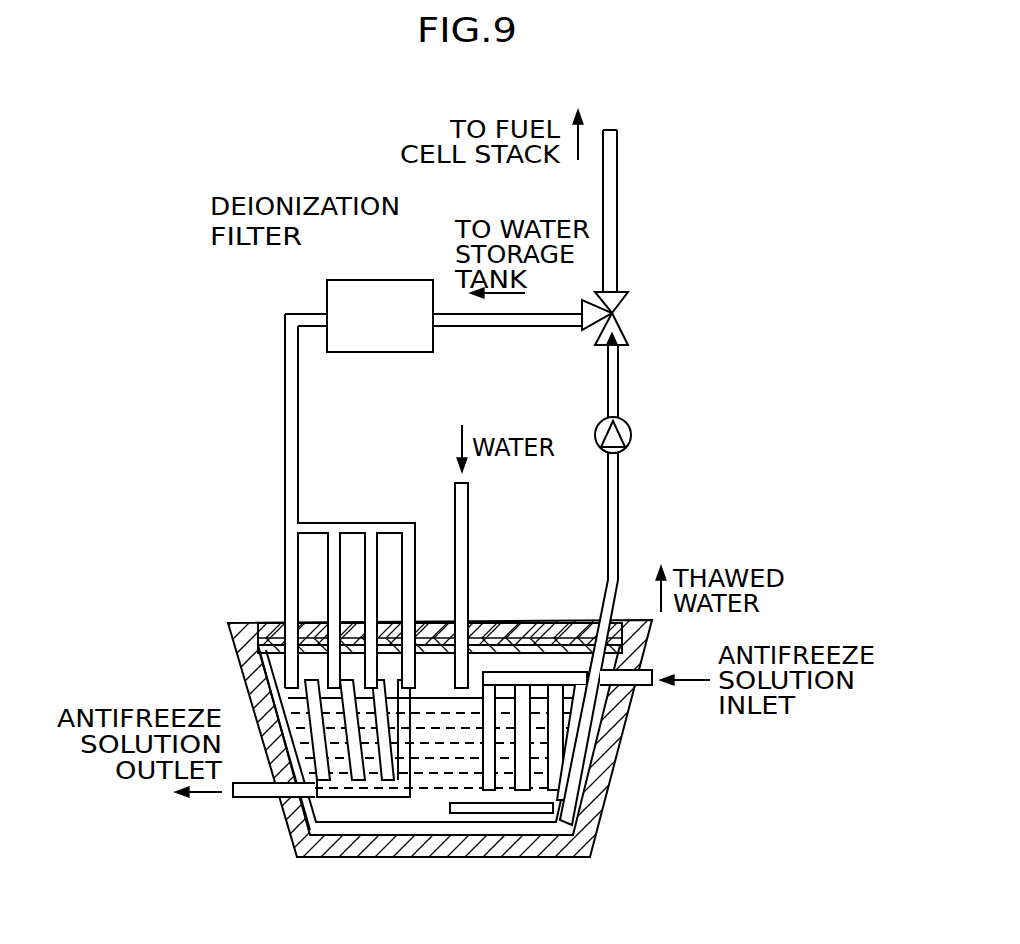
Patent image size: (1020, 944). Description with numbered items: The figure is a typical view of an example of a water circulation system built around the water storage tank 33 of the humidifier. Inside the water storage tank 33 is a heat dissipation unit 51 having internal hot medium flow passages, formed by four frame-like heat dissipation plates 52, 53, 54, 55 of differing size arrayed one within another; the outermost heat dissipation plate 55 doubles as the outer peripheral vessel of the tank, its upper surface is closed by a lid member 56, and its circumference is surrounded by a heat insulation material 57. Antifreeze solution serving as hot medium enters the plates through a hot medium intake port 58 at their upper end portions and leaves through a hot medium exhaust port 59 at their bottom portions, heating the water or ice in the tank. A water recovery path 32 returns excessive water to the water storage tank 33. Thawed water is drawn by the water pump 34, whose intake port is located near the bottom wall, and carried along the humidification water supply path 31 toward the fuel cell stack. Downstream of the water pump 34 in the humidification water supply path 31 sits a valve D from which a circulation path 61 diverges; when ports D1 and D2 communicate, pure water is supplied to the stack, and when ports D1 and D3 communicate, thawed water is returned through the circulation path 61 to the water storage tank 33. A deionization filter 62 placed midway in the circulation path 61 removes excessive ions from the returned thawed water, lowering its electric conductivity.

The humidification water supply path 31 is at (618, 136).
The water recovery path 32 is at (470, 527).
The water storage tank 33 is at (606, 827).
The water pump 34 is at (631, 432).
The heat dissipation unit 51 is at (550, 846).
The heat dissipation plate 52 is at (528, 789).
The heat dissipation plate 53 is at (528, 792).
The heat dissipation plate 54 is at (325, 770).
The outermost heat dissipation plate 55 is at (358, 828).
The lid member 56 is at (585, 621).
The heat insulation material 57 is at (600, 745).
The hot medium intake port 58 is at (630, 690).
The hot medium exhaust port 59 is at (265, 800).
The circulation path 61 is at (285, 443).
The deionization filter 62 is at (358, 280).
The valve D is at (616, 338).
The port D1 is at (626, 334).
The port D2 is at (625, 293).
The port D3 is at (596, 335).